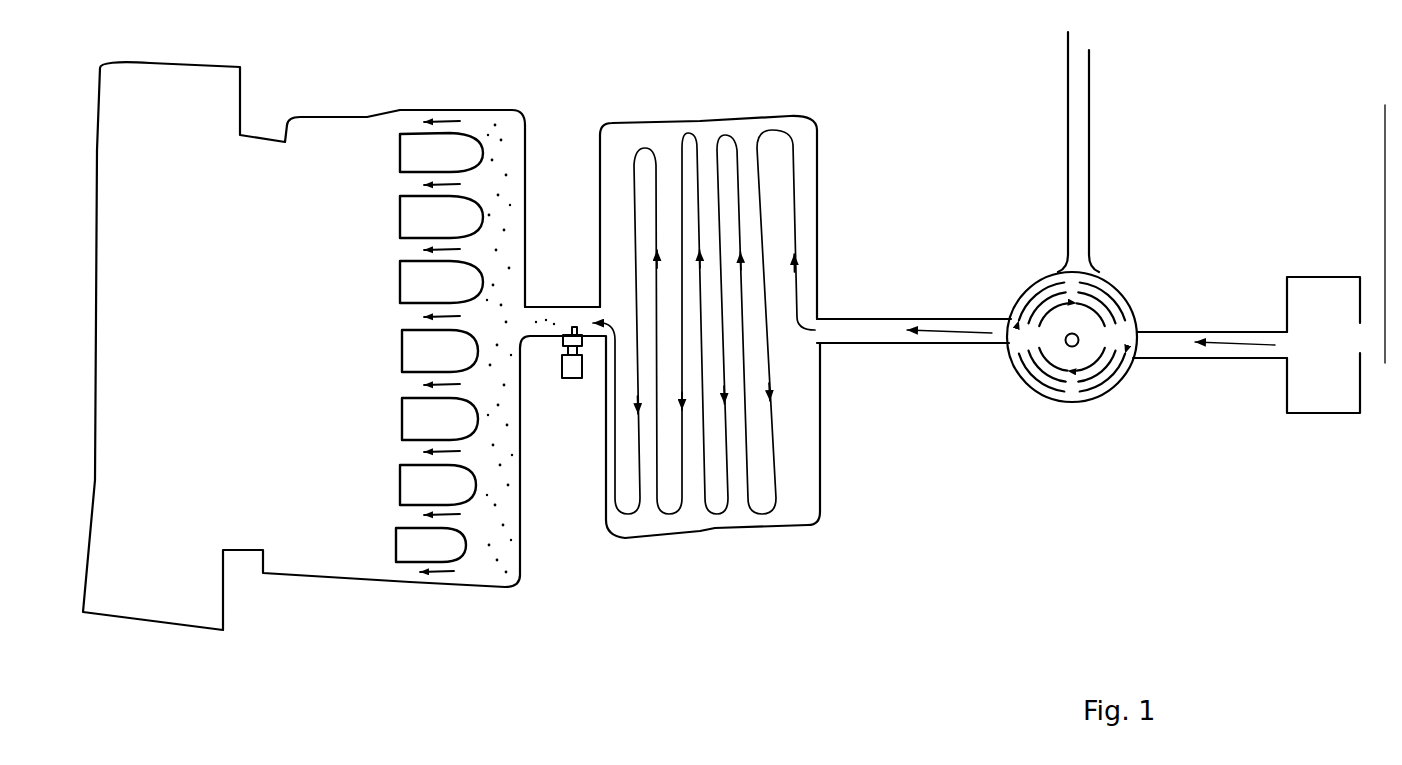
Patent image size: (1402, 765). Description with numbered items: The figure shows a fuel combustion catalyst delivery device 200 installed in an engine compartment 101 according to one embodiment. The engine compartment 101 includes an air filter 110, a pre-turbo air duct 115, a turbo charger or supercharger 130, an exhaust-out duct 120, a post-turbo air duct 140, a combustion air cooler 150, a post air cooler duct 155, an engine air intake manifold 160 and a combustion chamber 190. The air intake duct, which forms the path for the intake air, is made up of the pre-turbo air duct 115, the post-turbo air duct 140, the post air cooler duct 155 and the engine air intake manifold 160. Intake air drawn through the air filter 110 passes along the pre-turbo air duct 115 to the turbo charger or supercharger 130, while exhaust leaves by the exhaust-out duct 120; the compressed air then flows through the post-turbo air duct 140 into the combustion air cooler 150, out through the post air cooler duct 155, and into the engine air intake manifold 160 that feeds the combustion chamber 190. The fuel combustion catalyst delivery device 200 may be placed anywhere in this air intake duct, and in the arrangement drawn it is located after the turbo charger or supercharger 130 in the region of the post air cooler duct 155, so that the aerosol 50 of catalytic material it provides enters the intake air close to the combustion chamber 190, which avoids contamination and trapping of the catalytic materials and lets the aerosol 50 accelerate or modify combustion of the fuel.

The aerosol 50 is at (490, 562).
The engine compartment 101 is at (1092, 545).
The air filter 110 is at (1323, 415).
The pre-turbo air duct 115 is at (1203, 330).
The exhaust-out duct 120 is at (1092, 143).
The turbo charger or supercharger 130 is at (1055, 402).
The post-turbo air duct 140 is at (952, 315).
The combustion air cooler 150 is at (722, 533).
The post air cooler duct 155 is at (556, 308).
The engine air intake manifold 160 is at (450, 58).
The combustion chamber 190 is at (197, 593).
The fuel combustion catalyst delivery device 200 is at (567, 397).